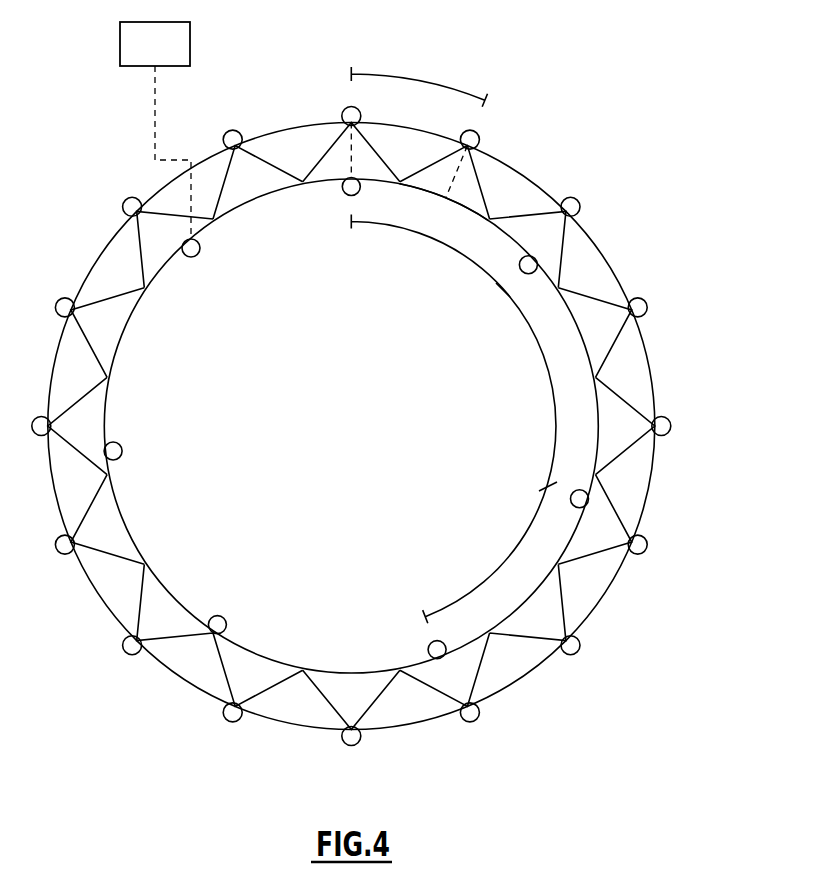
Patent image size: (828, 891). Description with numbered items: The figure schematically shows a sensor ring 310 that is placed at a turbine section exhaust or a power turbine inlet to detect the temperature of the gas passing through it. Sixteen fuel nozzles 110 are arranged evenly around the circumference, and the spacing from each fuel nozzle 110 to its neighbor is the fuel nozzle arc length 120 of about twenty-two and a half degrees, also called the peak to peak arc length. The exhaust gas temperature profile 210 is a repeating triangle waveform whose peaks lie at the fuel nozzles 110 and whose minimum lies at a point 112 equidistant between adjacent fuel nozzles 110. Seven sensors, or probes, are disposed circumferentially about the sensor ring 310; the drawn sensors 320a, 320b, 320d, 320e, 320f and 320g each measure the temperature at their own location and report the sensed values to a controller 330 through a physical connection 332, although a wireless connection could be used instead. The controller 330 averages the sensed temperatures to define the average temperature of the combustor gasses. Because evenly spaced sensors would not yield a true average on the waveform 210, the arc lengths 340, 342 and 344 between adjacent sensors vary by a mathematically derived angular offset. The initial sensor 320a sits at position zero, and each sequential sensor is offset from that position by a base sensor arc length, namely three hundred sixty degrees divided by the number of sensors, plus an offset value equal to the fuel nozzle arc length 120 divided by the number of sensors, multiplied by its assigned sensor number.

The fuel nozzle 110 is at (478, 137).
The point equidistant between fuel nozzles 112 is at (412, 190).
The fuel nozzle arc length 120 is at (427, 80).
The temperature profile 210 is at (482, 184).
The sensor ring 310 is at (252, 203).
The sensor 320a is at (342, 186).
The sensor 320b is at (538, 262).
The sensor 320d is at (428, 648).
The sensor 320e is at (226, 621).
The sensor 320f is at (121, 451).
The sensor 320g is at (200, 256).
The controller 330 is at (186, 61).
The physical connection 332 is at (157, 92).
The arc length 340 is at (430, 238).
The arc length 342 is at (553, 408).
The arc length 344 is at (497, 567).